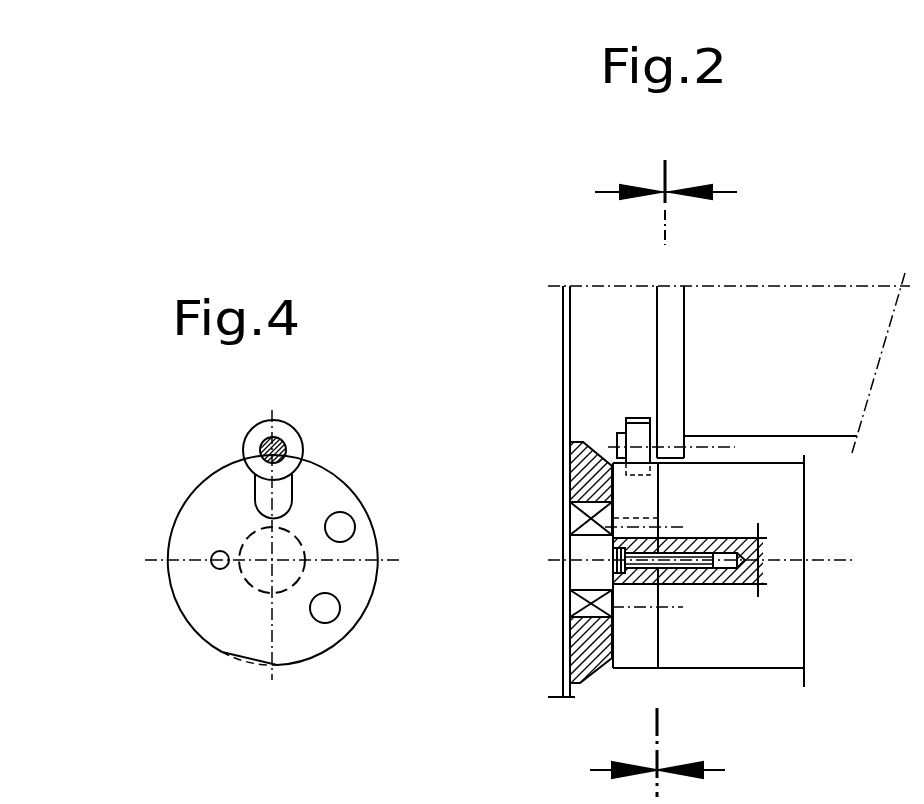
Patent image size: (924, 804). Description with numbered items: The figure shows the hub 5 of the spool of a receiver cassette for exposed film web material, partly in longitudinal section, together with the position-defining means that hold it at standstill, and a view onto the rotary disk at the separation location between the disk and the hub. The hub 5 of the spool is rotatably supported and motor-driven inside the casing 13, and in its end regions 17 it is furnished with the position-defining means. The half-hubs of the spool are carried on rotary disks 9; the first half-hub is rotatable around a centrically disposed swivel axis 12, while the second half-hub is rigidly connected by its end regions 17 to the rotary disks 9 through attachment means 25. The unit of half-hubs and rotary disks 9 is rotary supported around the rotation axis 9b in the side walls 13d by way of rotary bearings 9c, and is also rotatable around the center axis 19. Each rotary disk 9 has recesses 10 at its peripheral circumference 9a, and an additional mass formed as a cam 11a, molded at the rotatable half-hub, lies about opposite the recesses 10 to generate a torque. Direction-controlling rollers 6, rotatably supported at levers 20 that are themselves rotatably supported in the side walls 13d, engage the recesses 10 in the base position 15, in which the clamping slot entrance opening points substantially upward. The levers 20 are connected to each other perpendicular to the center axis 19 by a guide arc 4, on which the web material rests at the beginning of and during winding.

In FIG. 2, the guide arc 4 is at (735, 342).
In FIG. 2, the hub of the spool 5 is at (745, 650).
In FIG. 2, the direction-controlling rollers 6 is at (626, 422).
In FIG. 4, the direction-controlling rollers 6 is at (255, 435).
In FIG. 2, the rotary disks 9 is at (627, 643).
In FIG. 4, the rotary disks 9 is at (203, 601).
In FIG. 2, the peripheral circumference 9a is at (628, 668).
In FIG. 2, the rotation axis 9b is at (585, 575).
In FIG. 2, the rotary bearings 9c is at (569, 518).
In FIG. 2, the recesses 10 is at (576, 563).
In FIG. 4, the recesses 10 is at (268, 508).
In FIG. 4, the cam 11a is at (243, 668).
In FIG. 2, the swivel axis 12 is at (612, 557).
In FIG. 4, the swivel axis 12 is at (218, 563).
In FIG. 2, the casing 13 is at (570, 342).
In FIG. 2, the side walls 13d is at (562, 686).
In FIG. 2, the base position 15 is at (916, 528).
In FIG. 2, the end regions 17 is at (646, 318).
In FIG. 2, the center axis 19 is at (826, 565).
In FIG. 2, the levers 20 is at (671, 382).
In FIG. 2, the attachment means 25 is at (673, 608).
In FIG. 4, the attachment means 25 is at (340, 525).